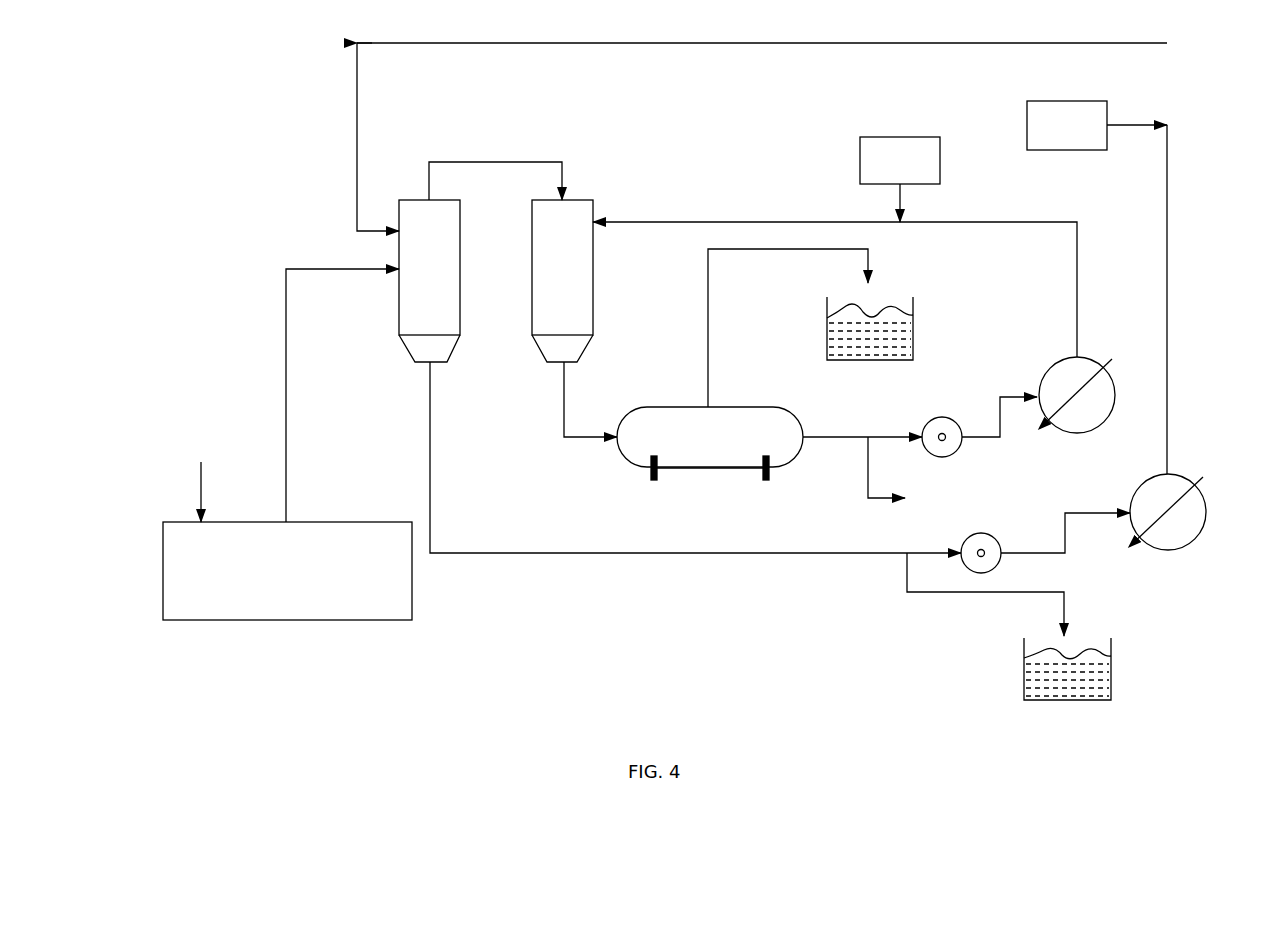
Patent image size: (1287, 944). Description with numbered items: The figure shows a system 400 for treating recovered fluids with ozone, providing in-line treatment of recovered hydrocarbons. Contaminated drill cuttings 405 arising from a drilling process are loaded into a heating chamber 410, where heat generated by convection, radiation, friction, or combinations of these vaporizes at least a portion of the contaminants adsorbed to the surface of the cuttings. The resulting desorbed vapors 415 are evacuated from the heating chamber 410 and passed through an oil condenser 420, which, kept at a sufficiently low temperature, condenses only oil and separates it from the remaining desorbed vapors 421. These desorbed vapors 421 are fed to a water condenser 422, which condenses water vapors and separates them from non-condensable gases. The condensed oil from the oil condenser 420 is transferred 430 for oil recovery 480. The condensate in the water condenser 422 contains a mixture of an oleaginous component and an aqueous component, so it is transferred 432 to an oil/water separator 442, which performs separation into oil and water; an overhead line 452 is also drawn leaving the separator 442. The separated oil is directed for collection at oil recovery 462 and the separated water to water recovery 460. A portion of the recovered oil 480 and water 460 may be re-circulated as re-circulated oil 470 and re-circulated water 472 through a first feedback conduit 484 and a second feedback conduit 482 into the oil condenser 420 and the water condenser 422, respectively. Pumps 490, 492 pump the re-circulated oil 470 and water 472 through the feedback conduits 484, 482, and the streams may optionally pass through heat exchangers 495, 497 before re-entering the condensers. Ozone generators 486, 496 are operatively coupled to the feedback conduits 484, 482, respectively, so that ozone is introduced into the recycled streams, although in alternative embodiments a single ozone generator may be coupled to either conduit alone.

The system 400 is at (298, 108).
The contaminated drill cuttings 405 is at (212, 479).
The heating chamber 410 is at (287, 571).
The desorbed vapors 415 is at (284, 312).
The oil condenser 420 is at (461, 258).
The desorbed vapors 421 is at (472, 160).
The water condenser 422 is at (594, 262).
The transfer of condensed oil vapors 430 is at (436, 460).
The transfer of condensed vapors 432 is at (567, 406).
The oil/water separator 442 is at (710, 443).
The overhead line 452 is at (710, 318).
The water recovery 460 is at (907, 472).
The oil recovery 462 is at (915, 325).
The re-circulated oil 470 is at (920, 551).
The re-circulated water 472 is at (855, 434).
The oil recovery 480 is at (1113, 667).
The second feedback conduit 482 is at (700, 218).
The first feedback conduit 484 is at (908, 33).
The ozone generator 486 is at (1097, 125).
The pump 490 is at (1000, 534).
The pump 492 is at (948, 412).
The heat exchanger 495 is at (1185, 476).
The ozone generator 496 is at (900, 179).
The heat exchanger 497 is at (1092, 357).